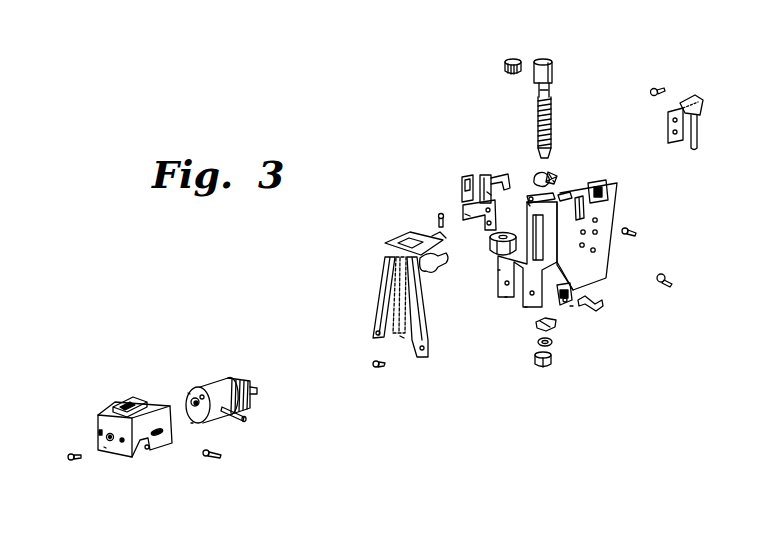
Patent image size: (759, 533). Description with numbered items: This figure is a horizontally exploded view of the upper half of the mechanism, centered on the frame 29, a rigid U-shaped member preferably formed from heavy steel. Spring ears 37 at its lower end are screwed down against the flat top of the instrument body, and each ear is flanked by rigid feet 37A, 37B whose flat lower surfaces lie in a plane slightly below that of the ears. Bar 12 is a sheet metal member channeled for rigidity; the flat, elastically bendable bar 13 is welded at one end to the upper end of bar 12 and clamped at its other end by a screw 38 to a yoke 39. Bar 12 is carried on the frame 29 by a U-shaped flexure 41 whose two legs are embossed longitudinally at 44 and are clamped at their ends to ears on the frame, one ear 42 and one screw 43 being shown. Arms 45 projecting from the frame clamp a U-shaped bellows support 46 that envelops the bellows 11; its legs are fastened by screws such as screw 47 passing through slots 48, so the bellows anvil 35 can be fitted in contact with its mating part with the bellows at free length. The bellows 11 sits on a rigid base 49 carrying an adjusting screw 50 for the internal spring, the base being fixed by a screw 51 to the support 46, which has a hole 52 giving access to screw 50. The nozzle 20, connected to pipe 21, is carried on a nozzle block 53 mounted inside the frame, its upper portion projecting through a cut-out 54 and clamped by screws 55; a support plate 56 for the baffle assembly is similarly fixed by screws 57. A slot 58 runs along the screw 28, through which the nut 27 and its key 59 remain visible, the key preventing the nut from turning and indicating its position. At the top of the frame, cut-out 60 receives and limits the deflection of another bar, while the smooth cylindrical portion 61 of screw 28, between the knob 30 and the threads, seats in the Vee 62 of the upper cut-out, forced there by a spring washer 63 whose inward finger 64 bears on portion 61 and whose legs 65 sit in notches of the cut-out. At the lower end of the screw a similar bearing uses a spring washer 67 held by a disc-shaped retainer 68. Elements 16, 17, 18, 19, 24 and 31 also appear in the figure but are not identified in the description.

The bellows 11 is at (236, 378).
The bar 12 is at (402, 338).
The bar 13 is at (408, 233).
The bracket 16 is at (497, 178).
The contact assembly 17 is at (449, 168).
The post 18 is at (478, 176).
The tab 19 is at (493, 195).
The nozzle 20 is at (660, 87).
The pipe 21 is at (700, 143).
The pin 24 is at (243, 418).
The nut 27 is at (492, 252).
The screw 28 is at (552, 125).
The frame 29 is at (594, 286).
The knob 30 is at (553, 67).
The cap 31 is at (504, 64).
The bellows anvil 35 is at (257, 384).
The spring ears 37 is at (597, 307).
The foot 37A is at (597, 300).
The foot 37B is at (570, 306).
The screw 38 is at (440, 212).
The yoke 39 is at (430, 272).
The flexure 41 is at (372, 271).
The ear 42 is at (558, 304).
The screw 43 is at (377, 367).
The embossing 44 is at (380, 300).
The arms 45 is at (505, 297).
The bellows support 46 is at (138, 442).
The screw 47 is at (222, 455).
The slots 48 is at (114, 406).
The base 49 is at (189, 393).
The screw 50 is at (191, 423).
The screw 51 is at (70, 459).
The hole 52 is at (105, 448).
The nozzle block 53 is at (703, 104).
The cut-out 54 is at (613, 182).
The screws 55 is at (637, 233).
The support plate 56 is at (467, 215).
The screws 57 is at (673, 281).
The slot 58 is at (498, 270).
The key 59 is at (490, 240).
The cut-out 60 is at (530, 203).
The cylindrical portion 61 is at (538, 90).
The Vee 62 is at (527, 200).
The spring washer 63 is at (556, 174).
The spring finger 64 is at (576, 186).
The legs 65 is at (535, 180).
The spring washer 67 is at (553, 328).
The retainer 68 is at (535, 362).